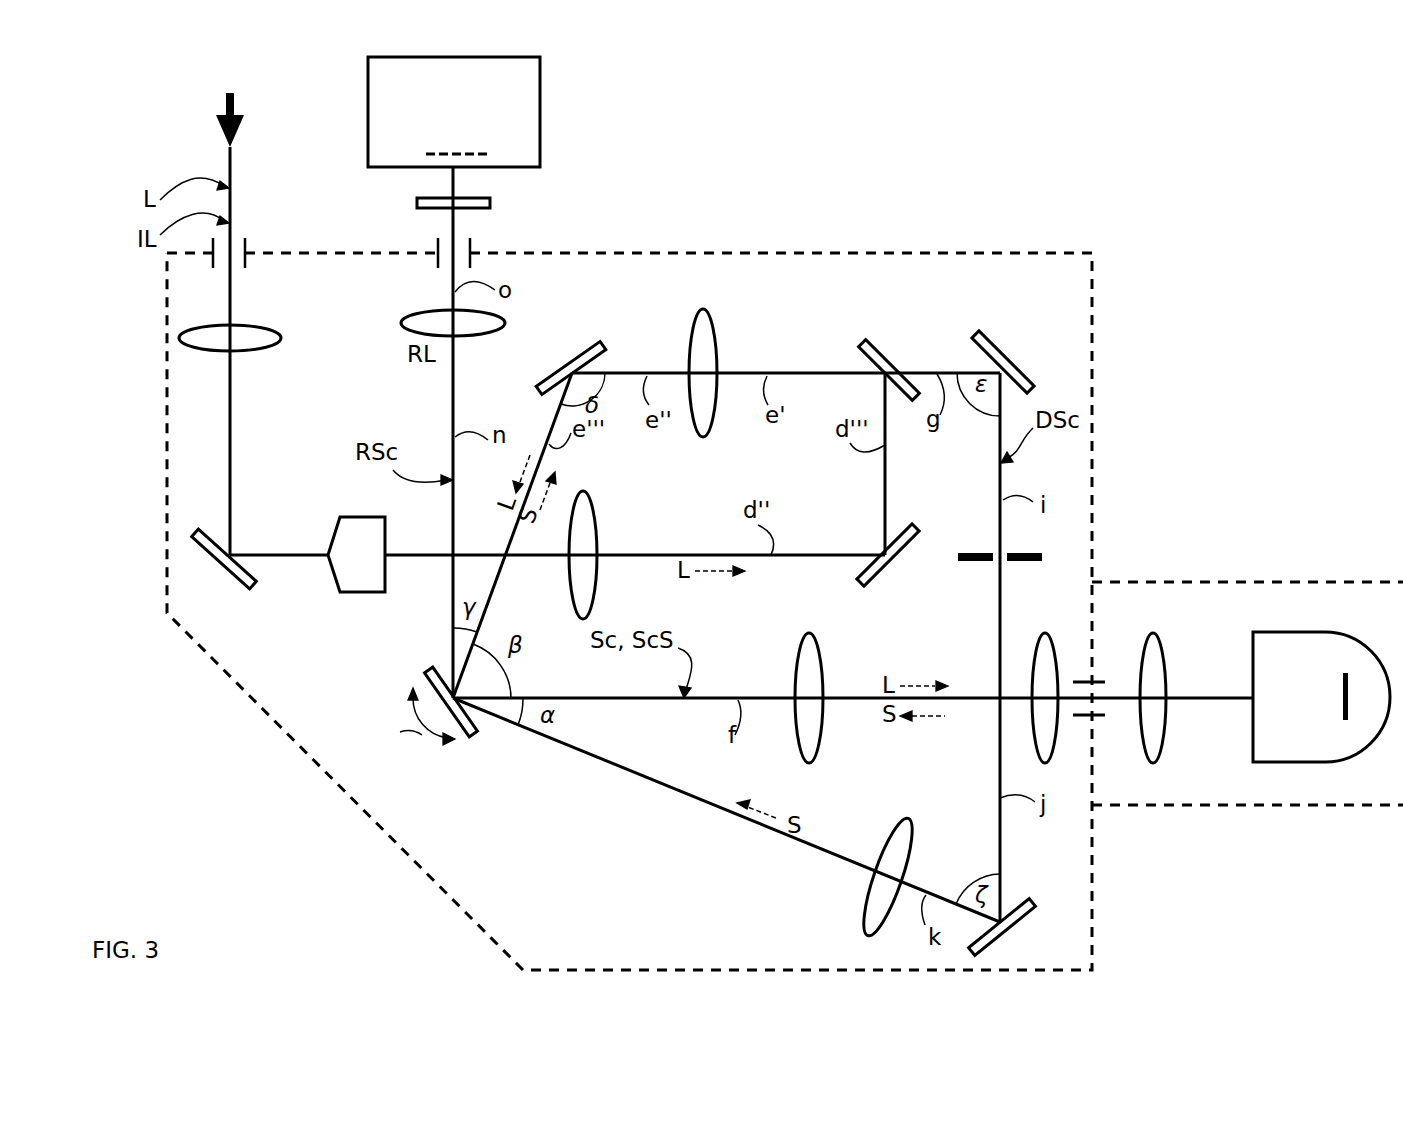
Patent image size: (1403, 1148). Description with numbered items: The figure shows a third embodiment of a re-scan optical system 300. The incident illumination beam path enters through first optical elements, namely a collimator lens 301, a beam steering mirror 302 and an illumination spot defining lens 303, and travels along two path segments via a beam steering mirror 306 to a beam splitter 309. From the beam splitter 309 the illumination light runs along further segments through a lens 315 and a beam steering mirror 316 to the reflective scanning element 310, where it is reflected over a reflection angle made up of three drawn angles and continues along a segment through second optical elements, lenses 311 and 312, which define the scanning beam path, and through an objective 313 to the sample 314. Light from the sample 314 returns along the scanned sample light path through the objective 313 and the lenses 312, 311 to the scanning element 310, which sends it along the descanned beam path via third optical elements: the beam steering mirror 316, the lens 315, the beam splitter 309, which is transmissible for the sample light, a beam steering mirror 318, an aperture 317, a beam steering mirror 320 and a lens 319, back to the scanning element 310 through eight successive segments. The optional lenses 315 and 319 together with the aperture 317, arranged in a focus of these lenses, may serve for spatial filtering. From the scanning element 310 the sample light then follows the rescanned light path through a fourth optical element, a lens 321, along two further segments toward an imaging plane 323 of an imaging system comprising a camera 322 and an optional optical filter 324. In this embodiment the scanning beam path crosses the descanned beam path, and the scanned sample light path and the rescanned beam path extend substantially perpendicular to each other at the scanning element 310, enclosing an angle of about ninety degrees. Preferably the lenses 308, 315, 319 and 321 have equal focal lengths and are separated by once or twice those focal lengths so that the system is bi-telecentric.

The re-scan optical system 300 is at (1116, 263).
The collimator lens 301 is at (190, 335).
The beam steering mirror 302 is at (192, 535).
The illumination spot defining lens 303 is at (360, 517).
The beam steering mirror 306 is at (905, 575).
The lens 308 is at (588, 520).
The beam splitter 309 is at (866, 340).
The reflective scanning element 310 is at (430, 672).
The lens 311 is at (812, 655).
The lens 312 is at (1055, 670).
The objective 313 is at (1160, 670).
The sample 314 is at (1355, 695).
The lens 315 is at (706, 337).
The beam steering mirror 316 is at (597, 342).
The aperture 317 is at (977, 548).
The beam steering mirror 318 is at (990, 340).
The lens 319 is at (875, 905).
The beam steering mirror 320 is at (985, 938).
The lens 321 is at (422, 320).
The camera 322 is at (368, 75).
The imaging plane 323 is at (452, 150).
The optical filter 324 is at (1095, 458).